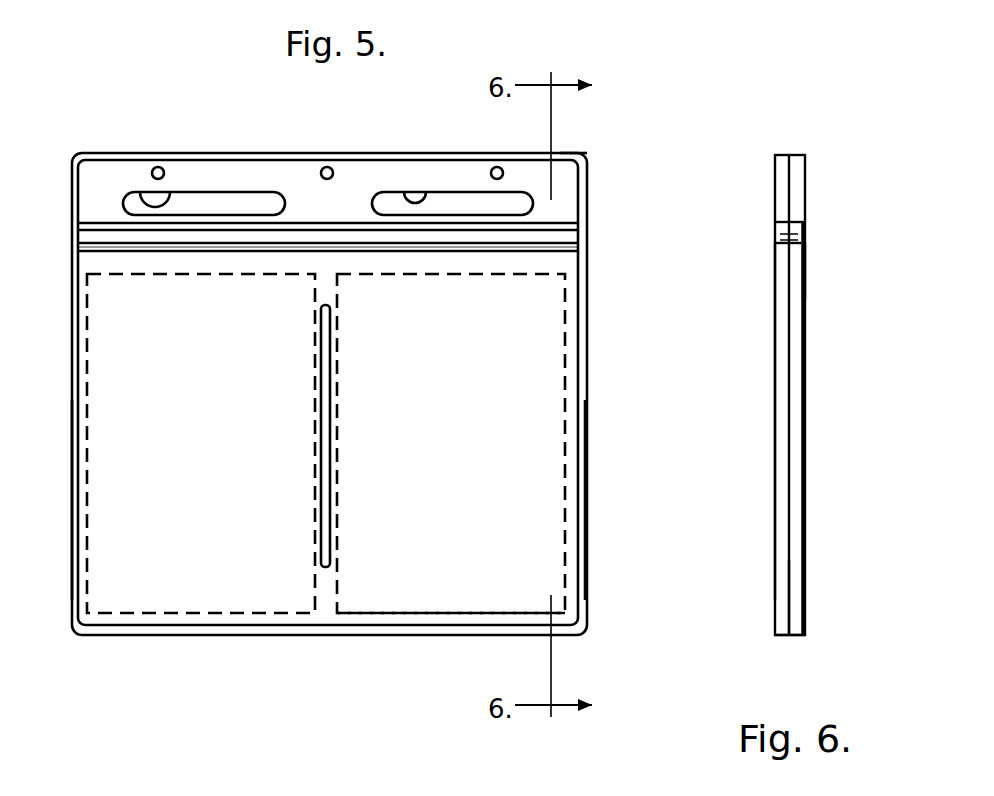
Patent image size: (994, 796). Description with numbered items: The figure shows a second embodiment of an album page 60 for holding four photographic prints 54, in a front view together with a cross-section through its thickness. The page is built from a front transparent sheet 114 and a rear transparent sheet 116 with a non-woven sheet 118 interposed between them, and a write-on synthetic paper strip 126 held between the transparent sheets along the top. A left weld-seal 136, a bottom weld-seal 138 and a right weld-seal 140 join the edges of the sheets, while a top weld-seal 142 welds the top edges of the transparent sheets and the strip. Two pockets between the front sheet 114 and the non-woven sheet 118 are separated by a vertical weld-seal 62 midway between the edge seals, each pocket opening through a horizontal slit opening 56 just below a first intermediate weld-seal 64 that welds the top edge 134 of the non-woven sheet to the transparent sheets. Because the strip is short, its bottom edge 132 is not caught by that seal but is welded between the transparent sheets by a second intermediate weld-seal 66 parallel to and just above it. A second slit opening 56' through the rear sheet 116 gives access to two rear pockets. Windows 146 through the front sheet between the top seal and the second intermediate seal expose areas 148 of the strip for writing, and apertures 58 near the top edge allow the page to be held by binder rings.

In FIG. 5, the photographic print 54 is at (90, 421).
In FIG. 6, the slit opening 56 is at (755, 280).
In FIG. 5, the second slit opening 56' is at (328, 283).
In FIG. 6, the second slit opening 56' is at (831, 284).
In FIG. 5, the apertures 58 is at (163, 168).
In FIG. 5, the album page 60 is at (591, 186).
In FIG. 5, the vertical weld-seal 62 is at (330, 466).
In FIG. 5, the first intermediate weld-seal 64 is at (560, 247).
In FIG. 6, the first intermediate weld-seal 64 is at (802, 238).
In FIG. 5, the second intermediate weld-seal 66 is at (562, 223).
In FIG. 6, the second intermediate weld-seal 66 is at (797, 222).
In FIG. 5, the first transparent sheet 114 is at (452, 532).
In FIG. 6, the first transparent sheet 114 is at (776, 420).
In FIG. 6, the second transparent sheet 116 is at (806, 420).
In FIG. 6, the non-woven sheet 118 is at (790, 590).
In FIG. 5, the synthetic paper strip 126 is at (85, 187).
In FIG. 6, the synthetic paper strip 126 is at (790, 197).
In FIG. 6, the bottom edge of synthetic paper strip 132 is at (790, 236).
In FIG. 6, the top edge of non-woven sheet 134 is at (786, 242).
In FIG. 5, the left weld-seal 136 is at (72, 520).
In FIG. 6, the bottom weld-seal 138 is at (793, 637).
In FIG. 5, the right weld-seal 140 is at (588, 495).
In FIG. 5, the top weld-seal 142 is at (97, 152).
In FIG. 6, the top weld-seal 142 is at (802, 156).
In FIG. 5, the window 146 is at (140, 192).
In FIG. 5, the exposed area 148 is at (216, 215).